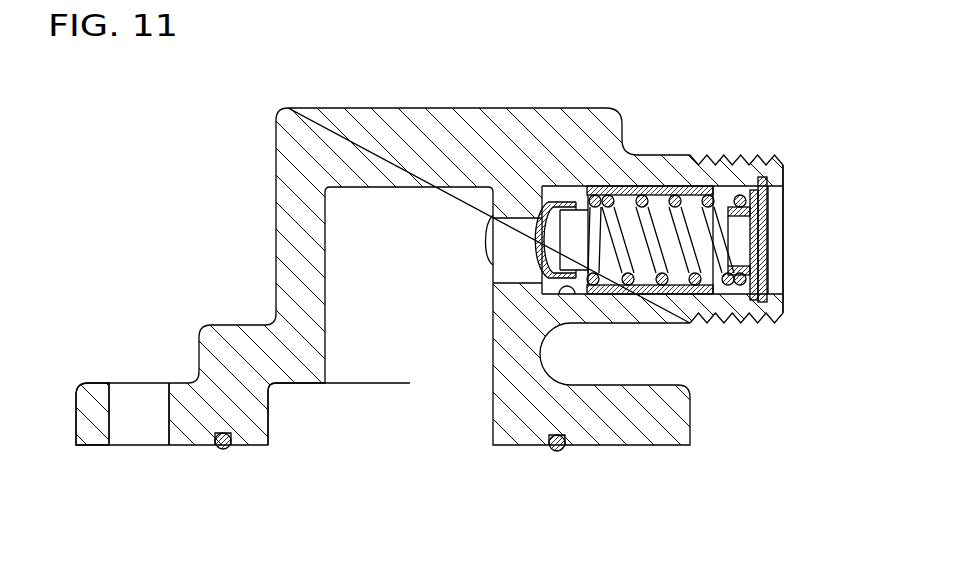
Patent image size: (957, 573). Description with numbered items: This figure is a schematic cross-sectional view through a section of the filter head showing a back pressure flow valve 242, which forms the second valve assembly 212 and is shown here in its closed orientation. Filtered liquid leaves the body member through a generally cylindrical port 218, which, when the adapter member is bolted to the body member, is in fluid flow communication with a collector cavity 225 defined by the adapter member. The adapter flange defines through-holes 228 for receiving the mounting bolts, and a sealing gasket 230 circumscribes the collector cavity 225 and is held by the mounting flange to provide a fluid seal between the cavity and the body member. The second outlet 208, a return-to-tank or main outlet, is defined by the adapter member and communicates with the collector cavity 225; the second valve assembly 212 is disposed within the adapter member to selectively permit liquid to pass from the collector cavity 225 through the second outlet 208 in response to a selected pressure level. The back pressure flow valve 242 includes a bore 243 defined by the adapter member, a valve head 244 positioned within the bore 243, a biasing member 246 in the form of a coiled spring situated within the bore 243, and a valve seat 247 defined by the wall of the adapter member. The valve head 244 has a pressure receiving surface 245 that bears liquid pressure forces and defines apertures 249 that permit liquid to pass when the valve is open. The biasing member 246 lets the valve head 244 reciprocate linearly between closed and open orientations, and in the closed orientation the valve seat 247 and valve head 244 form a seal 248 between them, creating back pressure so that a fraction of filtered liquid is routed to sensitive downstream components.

The second outlet 208 is at (772, 283).
The second valve assembly 212 is at (700, 171).
The port 218 is at (491, 425).
The collector cavity 225 is at (270, 423).
The through-holes 228 is at (110, 423).
The sealing gasket 230 is at (217, 449).
The back pressure flow valve 242 is at (640, 294).
The bore 243 is at (573, 294).
The valve head 244 is at (538, 245).
The pressure receiving surface 245 is at (540, 233).
The biasing member 246 is at (648, 190).
The valve seat 247 is at (553, 190).
The seal 248 is at (552, 283).
The apertures 249 is at (572, 190).